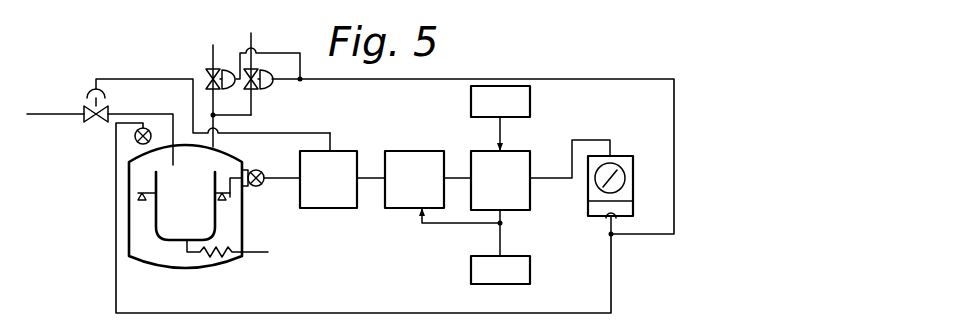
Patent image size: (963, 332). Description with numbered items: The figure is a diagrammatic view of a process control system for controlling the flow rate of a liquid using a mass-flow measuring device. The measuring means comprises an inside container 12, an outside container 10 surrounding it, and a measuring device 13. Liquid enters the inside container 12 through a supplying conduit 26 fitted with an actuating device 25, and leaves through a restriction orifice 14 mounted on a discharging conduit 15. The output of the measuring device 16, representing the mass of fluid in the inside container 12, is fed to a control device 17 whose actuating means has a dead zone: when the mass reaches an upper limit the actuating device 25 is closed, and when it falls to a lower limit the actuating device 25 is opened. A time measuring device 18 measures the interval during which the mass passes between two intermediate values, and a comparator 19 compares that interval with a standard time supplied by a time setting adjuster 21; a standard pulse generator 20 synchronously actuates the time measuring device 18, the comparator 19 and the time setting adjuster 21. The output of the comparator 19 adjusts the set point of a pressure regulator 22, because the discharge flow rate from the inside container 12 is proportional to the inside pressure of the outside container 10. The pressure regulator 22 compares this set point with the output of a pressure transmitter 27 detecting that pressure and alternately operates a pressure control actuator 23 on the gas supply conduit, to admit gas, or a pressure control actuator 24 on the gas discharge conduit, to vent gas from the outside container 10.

The outside container 10 is at (131, 235).
The inside container 12 is at (176, 236).
The measuring device 13 is at (232, 196).
The restriction orifice 14 is at (202, 264).
The discharging conduit 15 is at (250, 255).
The measuring device 16 is at (259, 170).
The control device 17 is at (326, 203).
The time measuring device 18 is at (400, 204).
The comparator 19 is at (518, 198).
The standard pulse generator 20 is at (522, 270).
The time setting adjuster 21 is at (525, 97).
The pressure regulator 22 is at (628, 191).
The pressure control actuator 23 is at (273, 84).
The pressure control actuator 24 is at (228, 68).
The actuating device 25 is at (90, 88).
The supplying conduit 26 is at (94, 124).
The pressure transmitter 27 is at (146, 127).